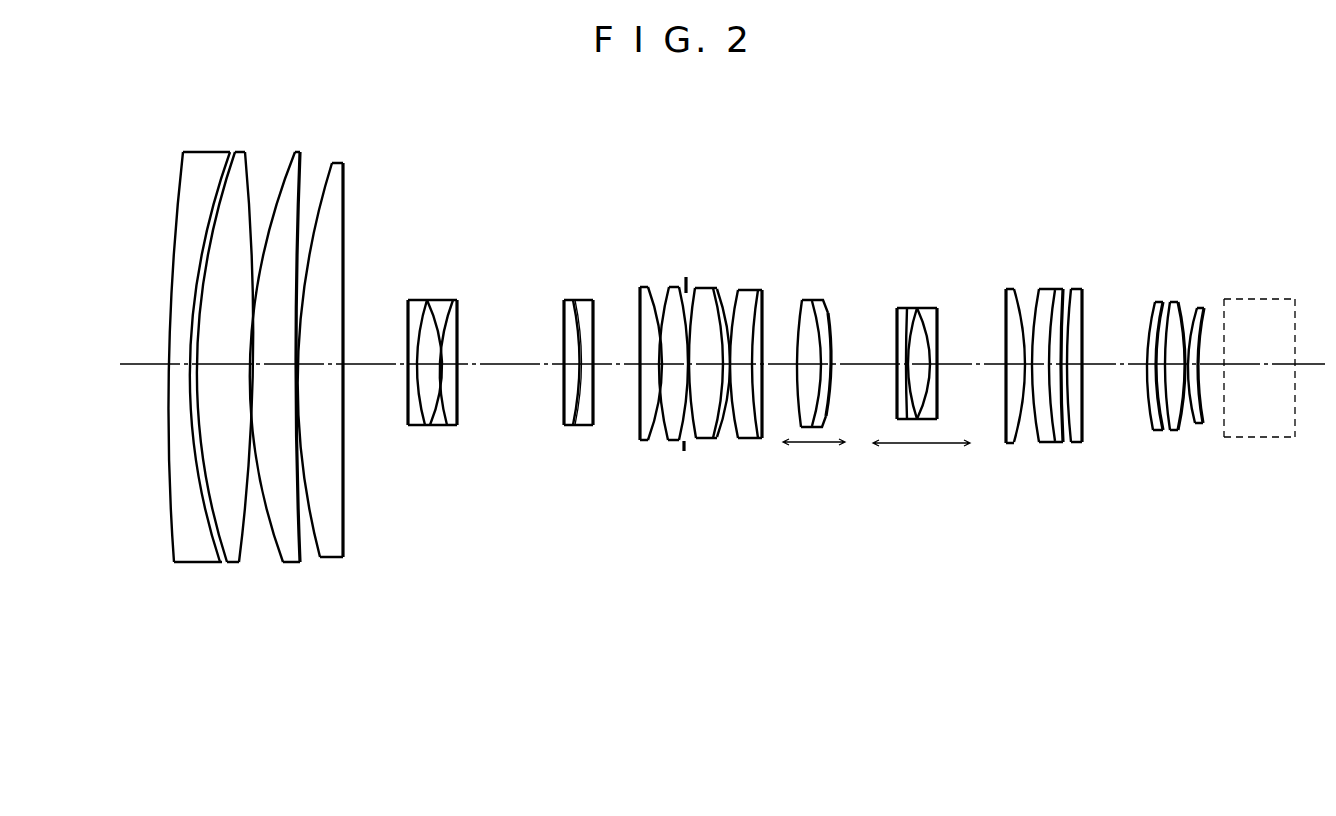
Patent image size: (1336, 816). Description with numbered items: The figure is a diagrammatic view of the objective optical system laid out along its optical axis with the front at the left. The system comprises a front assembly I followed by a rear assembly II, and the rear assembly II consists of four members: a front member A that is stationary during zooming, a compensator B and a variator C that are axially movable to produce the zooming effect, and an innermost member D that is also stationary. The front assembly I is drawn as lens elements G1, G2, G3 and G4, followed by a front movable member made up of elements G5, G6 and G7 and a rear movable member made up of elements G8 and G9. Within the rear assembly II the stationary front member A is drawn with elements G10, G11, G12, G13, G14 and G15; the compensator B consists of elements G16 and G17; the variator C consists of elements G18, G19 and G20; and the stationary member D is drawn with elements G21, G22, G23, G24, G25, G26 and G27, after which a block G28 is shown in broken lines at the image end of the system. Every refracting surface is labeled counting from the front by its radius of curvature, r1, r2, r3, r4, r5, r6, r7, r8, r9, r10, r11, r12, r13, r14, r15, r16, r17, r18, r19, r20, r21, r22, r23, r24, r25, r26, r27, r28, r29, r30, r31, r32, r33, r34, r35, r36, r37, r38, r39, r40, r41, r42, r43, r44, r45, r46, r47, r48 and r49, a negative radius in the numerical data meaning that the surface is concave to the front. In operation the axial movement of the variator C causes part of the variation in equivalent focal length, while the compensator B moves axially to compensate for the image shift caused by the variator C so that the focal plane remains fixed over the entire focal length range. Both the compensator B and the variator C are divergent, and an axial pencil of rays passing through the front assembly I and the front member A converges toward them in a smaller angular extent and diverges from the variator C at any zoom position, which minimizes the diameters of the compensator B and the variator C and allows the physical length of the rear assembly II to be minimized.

The front assembly I is at (175, 100).
The rear assembly II is at (628, 100).
The front member A is at (812, 240).
The compensator B is at (882, 240).
The variator C is at (975, 240).
The innermost member D is at (985, 240).
The lens element G1 is at (200, 166).
The lens element G2 is at (243, 168).
The lens element G3 is at (297, 168).
The lens element G4 is at (338, 178).
The lens element G5 is at (418, 305).
The lens element G6 is at (440, 305).
The lens element G7 is at (459, 312).
The lens element G8 is at (575, 305).
The lens element G9 is at (589, 310).
The lens element G10 is at (643, 295).
The lens element G11 is at (672, 295).
The lens element G12 is at (699, 295).
The lens element G13 is at (714, 298).
The lens element G14 is at (745, 298).
The lens element G15 is at (760, 300).
The lens element G16 is at (808, 305).
The lens element G17 is at (826, 318).
The lens element G18 is at (905, 312).
The lens element G19 is at (920, 312).
The lens element G20 is at (935, 312).
The lens element G21 is at (1010, 298).
The lens element G22 is at (1041, 298).
The lens element G23 is at (1055, 298).
The lens element G24 is at (1076, 298).
The lens element G25 is at (1157, 310).
The lens element G26 is at (1173, 310).
The lens element G27 is at (1200, 312).
The plane-parallel plate G28 is at (1255, 300).
The refracting surface r1 is at (174, 552).
The refracting surface r2 is at (216, 553).
The refracting surface r3 is at (226, 556).
The refracting surface r4 is at (242, 555).
The refracting surface r5 is at (283, 553).
The refracting surface r6 is at (300, 553).
The refracting surface r7 is at (322, 548).
The refracting surface r8 is at (344, 548).
The refracting surface r9 is at (408, 404).
The refracting surface r10 is at (426, 421).
The refracting surface r11 is at (451, 445).
The refracting surface r12 is at (448, 423).
The refracting surface r13 is at (458, 404).
The refracting surface r14 is at (566, 418).
The refracting surface r15 is at (594, 445).
The refracting surface r16 is at (594, 428).
The refracting surface r17 is at (594, 400).
The refracting surface r18 is at (640, 442).
The refracting surface r19 is at (655, 442).
The refracting surface r20 is at (678, 442).
The refracting surface r21 is at (695, 440).
The refracting surface r22 is at (712, 440).
The refracting surface r23 is at (719, 440).
The refracting surface r24 is at (740, 440).
The refracting surface r25 is at (757, 440).
The refracting surface r26 is at (763, 440).
The refracting surface r27 is at (801, 430).
The refracting surface r28 is at (812, 428).
The refracting surface r29 is at (824, 428).
The refracting surface r30 is at (897, 410).
The refracting surface r31 is at (898, 418).
The refracting surface r32 is at (913, 421).
The refracting surface r33 is at (933, 398).
The refracting surface r34 is at (938, 414).
The refracting surface r35 is at (1006, 440).
The refracting surface r36 is at (1016, 443).
The refracting surface r37 is at (1037, 443).
The refracting surface r38 is at (1054, 443).
The refracting surface r39 is at (1063, 443).
The refracting surface r40 is at (1072, 443).
The refracting surface r41 is at (1083, 443).
The refracting surface r42 is at (1154, 428).
The refracting surface r43 is at (1158, 432).
The refracting surface r44 is at (1165, 432).
The refracting surface r45 is at (1178, 432).
The refracting surface r46 is at (1192, 425).
The refracting surface r47 is at (1203, 425).
The refracting surface r48 is at (1224, 430).
The refracting surface r49 is at (1296, 430).